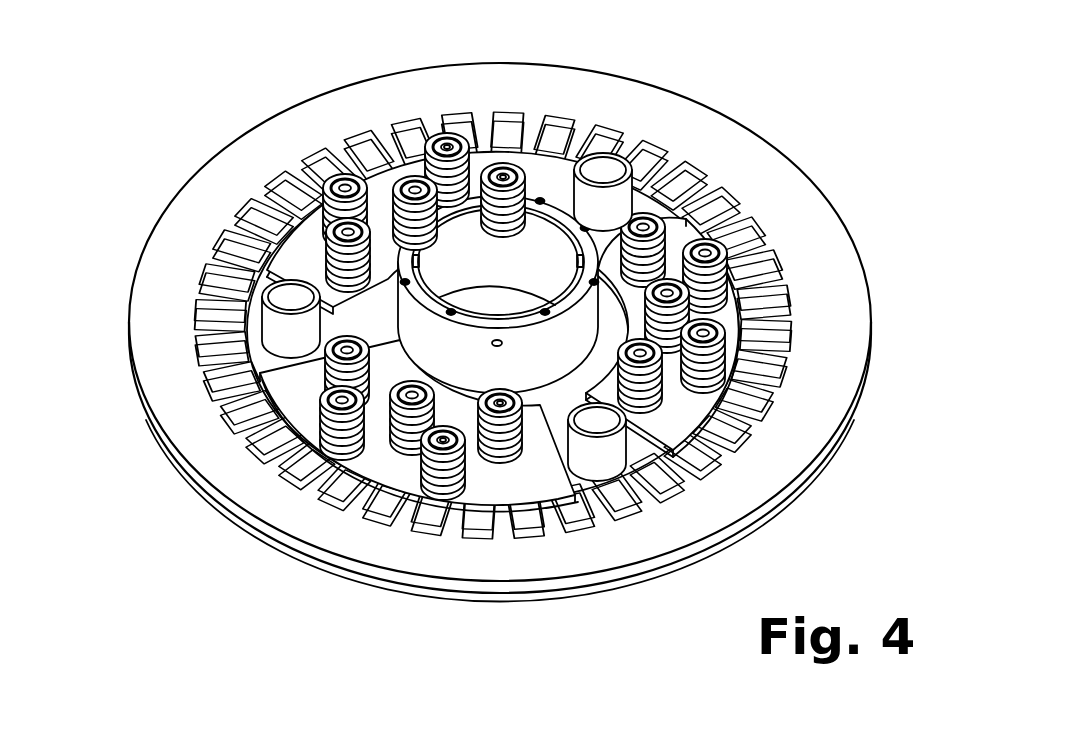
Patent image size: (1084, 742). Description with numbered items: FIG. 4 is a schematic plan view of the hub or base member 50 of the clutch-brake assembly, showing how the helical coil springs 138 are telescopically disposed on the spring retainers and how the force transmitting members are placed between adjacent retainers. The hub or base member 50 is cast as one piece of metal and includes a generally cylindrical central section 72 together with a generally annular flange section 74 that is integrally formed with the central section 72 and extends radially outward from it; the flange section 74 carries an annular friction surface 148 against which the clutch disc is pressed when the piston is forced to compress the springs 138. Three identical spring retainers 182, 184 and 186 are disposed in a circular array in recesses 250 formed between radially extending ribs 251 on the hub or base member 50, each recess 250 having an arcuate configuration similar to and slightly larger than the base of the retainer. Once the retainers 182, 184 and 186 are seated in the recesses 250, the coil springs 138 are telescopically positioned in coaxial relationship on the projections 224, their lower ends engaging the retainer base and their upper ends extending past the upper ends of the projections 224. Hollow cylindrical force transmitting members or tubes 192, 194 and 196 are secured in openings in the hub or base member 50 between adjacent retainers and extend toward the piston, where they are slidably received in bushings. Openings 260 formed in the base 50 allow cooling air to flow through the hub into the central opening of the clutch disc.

The hub or base member 50 is at (838, 200).
The central section 72 is at (549, 313).
The flange section 74 is at (307, 122).
The helical coil springs 138 is at (415, 183).
The annular friction surface 148 is at (845, 322).
The spring retainer 182 is at (300, 250).
The spring retainer 184 is at (680, 410).
The spring retainer 186 is at (365, 478).
The force transmitting member 192 is at (615, 163).
The force transmitting member 194 is at (610, 448).
The force transmitting member 196 is at (290, 318).
The projections 224 is at (503, 175).
The recesses 250 is at (563, 197).
The radially extending ribs 251 is at (667, 180).
The openings 260 is at (660, 195).